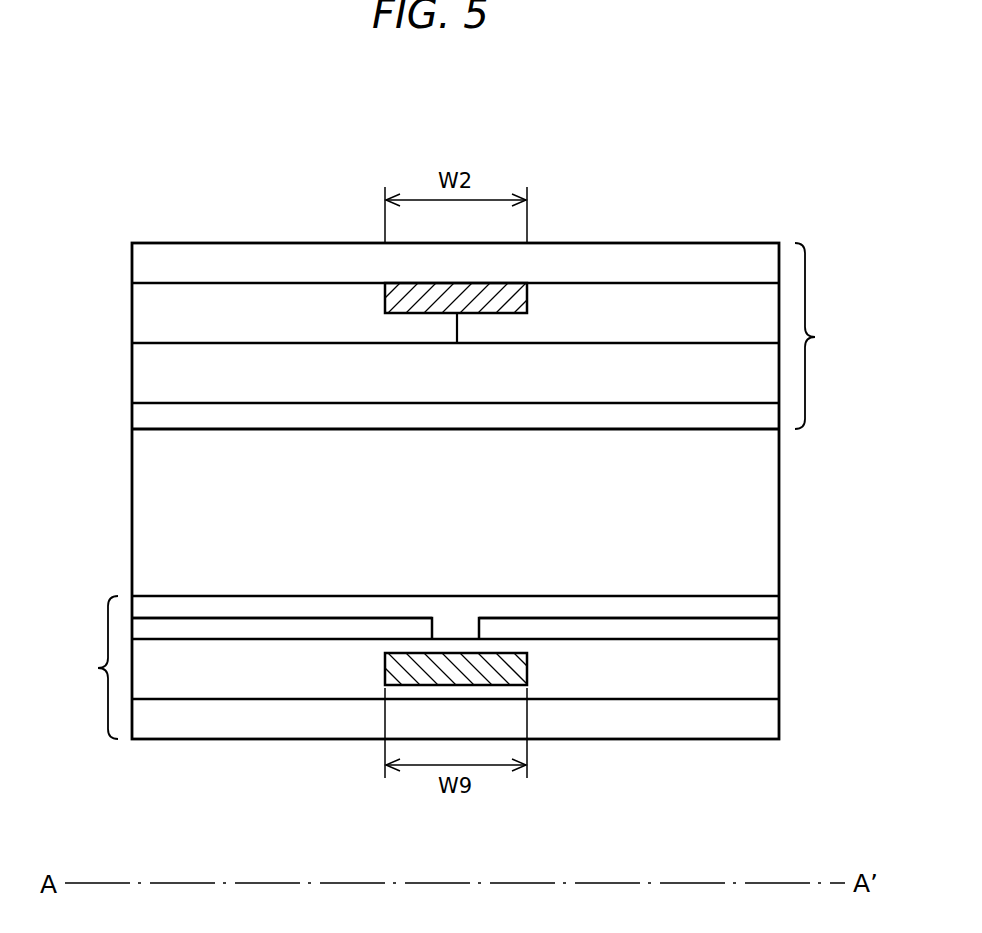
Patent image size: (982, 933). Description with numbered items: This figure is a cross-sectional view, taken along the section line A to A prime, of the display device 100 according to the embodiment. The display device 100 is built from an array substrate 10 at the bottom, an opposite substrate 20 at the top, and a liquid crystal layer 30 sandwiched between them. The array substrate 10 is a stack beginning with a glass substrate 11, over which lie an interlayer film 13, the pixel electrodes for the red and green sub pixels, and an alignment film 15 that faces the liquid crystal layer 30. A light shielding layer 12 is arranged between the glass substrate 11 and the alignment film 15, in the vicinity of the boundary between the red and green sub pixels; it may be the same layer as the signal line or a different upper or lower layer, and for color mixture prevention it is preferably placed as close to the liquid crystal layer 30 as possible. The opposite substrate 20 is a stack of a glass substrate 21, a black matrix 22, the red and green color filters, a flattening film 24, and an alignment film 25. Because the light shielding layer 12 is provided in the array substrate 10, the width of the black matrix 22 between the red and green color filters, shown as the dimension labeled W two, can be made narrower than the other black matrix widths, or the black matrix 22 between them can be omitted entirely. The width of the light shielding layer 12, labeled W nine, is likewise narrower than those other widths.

The display device 100 is at (481, 111).
The array substrate 10 is at (88, 667).
The glass substrate 11 is at (768, 721).
The light shielding layer 12 is at (520, 666).
The interlayer film 13 is at (768, 669).
The alignment film 15 is at (768, 609).
The opposite substrate 20 is at (826, 336).
The glass substrate 21 is at (143, 263).
The black matrix 22 is at (528, 300).
The flattening film 24 is at (143, 371).
The alignment film 25 is at (143, 415).
The liquid crystal layer 30 is at (143, 483).